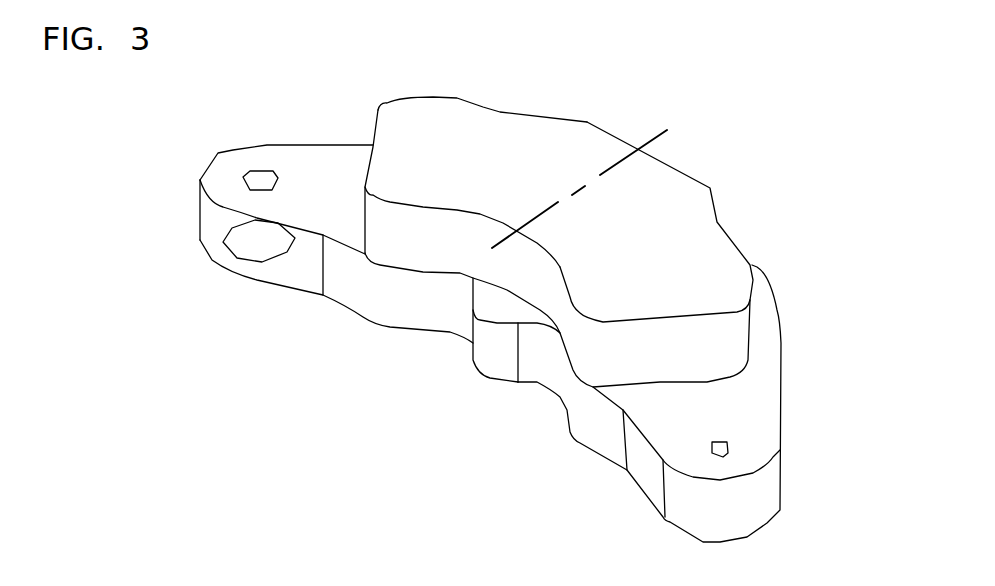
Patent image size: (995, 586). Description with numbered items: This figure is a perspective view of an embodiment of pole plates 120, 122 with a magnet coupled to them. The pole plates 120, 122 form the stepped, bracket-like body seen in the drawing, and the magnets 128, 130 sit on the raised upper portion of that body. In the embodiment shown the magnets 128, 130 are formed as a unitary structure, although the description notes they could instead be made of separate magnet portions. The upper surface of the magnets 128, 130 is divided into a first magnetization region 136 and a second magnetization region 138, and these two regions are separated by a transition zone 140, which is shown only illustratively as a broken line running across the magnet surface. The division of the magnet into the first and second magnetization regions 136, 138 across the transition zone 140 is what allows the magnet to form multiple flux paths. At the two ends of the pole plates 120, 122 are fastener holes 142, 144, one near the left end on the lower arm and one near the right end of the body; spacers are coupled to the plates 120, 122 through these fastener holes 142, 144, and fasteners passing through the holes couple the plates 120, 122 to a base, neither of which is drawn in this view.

The pole plate 120 is at (554, 326).
The pole plate 122 is at (762, 438).
The magnet 128 is at (578, 199).
The magnet 130 is at (578, 199).
The first magnetization region 136 is at (500, 171).
The second magnetization region 138 is at (678, 279).
The transition zone 140 is at (585, 186).
The fastener hole 142 is at (268, 168).
The fastener hole 144 is at (728, 450).